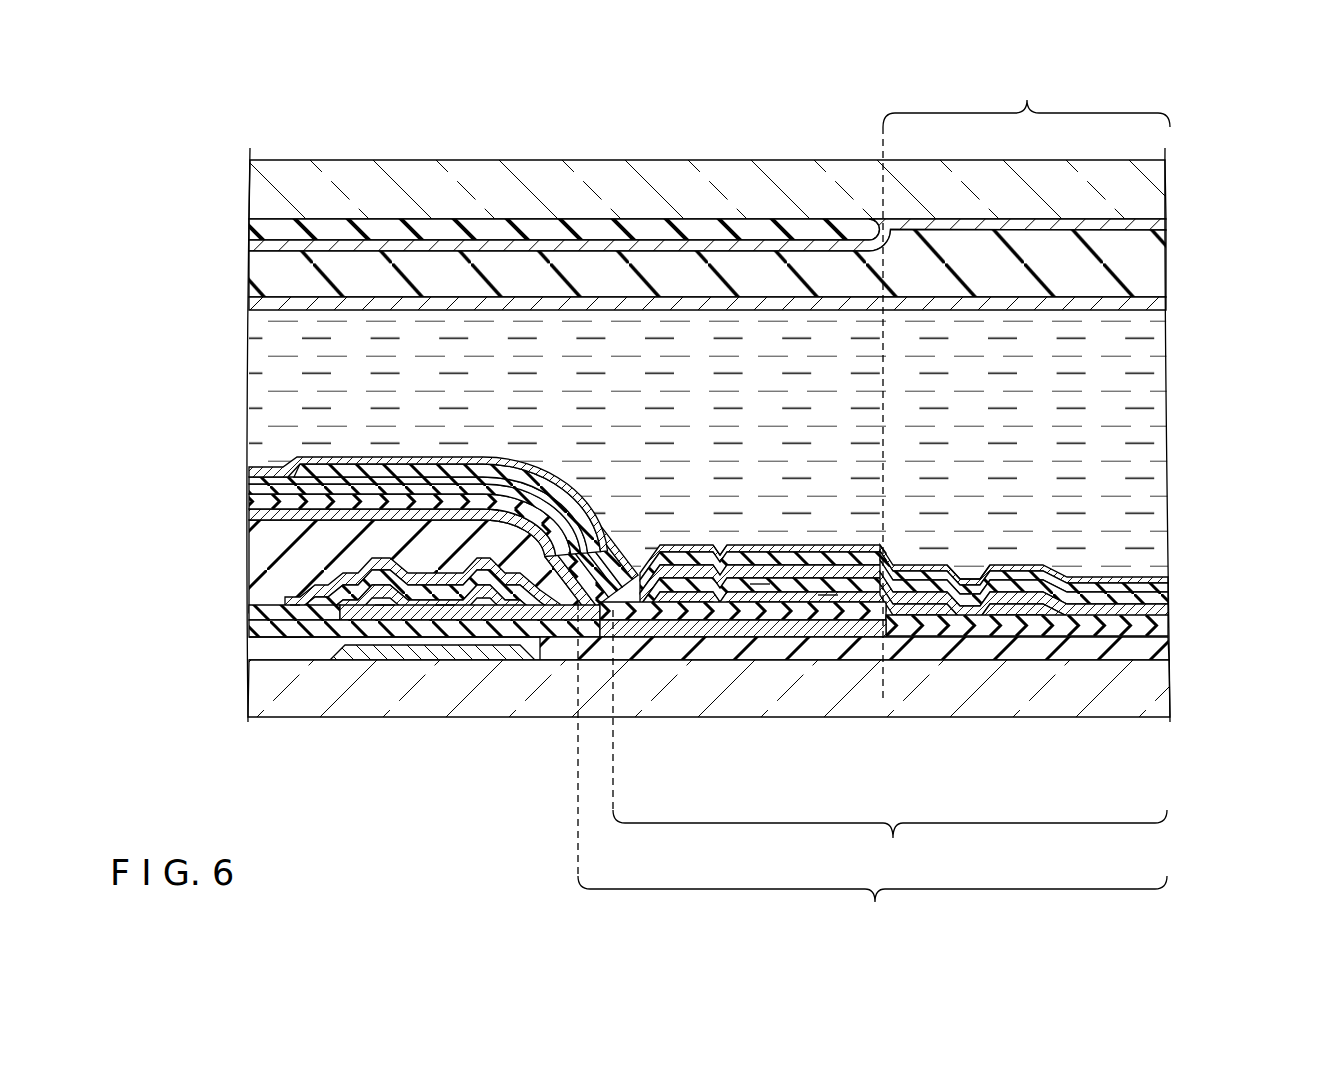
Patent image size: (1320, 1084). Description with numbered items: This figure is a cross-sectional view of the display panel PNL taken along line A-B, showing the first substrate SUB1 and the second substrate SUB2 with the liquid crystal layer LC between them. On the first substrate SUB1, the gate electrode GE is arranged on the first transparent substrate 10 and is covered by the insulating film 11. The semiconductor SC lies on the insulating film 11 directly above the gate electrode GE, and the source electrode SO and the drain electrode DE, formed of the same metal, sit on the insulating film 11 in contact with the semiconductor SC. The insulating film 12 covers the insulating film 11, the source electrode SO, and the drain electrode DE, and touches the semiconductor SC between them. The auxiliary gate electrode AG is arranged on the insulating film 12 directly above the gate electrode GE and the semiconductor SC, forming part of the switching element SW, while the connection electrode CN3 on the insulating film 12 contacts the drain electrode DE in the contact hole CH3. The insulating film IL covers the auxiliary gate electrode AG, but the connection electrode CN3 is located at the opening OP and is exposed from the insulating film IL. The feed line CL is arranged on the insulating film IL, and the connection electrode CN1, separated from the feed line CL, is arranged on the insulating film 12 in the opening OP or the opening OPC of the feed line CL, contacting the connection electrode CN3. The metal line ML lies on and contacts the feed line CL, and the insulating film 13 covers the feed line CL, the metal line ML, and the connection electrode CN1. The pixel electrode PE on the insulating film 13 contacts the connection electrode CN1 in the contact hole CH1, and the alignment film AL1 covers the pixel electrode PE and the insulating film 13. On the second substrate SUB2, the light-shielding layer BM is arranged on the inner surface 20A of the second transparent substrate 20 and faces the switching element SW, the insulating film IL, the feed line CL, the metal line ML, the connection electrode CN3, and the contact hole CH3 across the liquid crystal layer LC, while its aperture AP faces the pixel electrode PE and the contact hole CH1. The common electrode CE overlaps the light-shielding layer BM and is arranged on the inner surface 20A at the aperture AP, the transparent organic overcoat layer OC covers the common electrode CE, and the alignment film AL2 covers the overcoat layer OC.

The display panel PNL is at (720, 501).
The second substrate SUB2 is at (720, 217).
The first substrate SUB1 is at (721, 604).
The second transparent substrate 20 is at (258, 195).
The inner surface 20A is at (694, 236).
The light-shielding layer BM is at (265, 237).
The common electrode CE is at (262, 246).
The overcoat layer OC is at (274, 277).
The alignment film AL2 is at (262, 305).
The liquid crystal layer LC is at (262, 400).
The alignment film AL1 is at (265, 472).
The insulating film 13 is at (262, 489).
The insulating film IL is at (262, 556).
The insulating film 12 is at (262, 617).
The insulating film 11 is at (262, 645).
The first transparent substrate 10 is at (262, 695).
The metal line ML is at (437, 460).
The feed line CL is at (497, 498).
The pixel electrode PE is at (537, 474).
The source electrode SO is at (295, 612).
The gate electrode GE is at (352, 655).
The semiconductor SC is at (384, 612).
The auxiliary gate electrode AG is at (447, 618).
The switching element SW is at (506, 608).
The drain electrode DE is at (640, 625).
The contact hole CH3 is at (724, 602).
The connection electrode CN1 is at (760, 590).
The connection electrode CN3 is at (828, 600).
The contact hole CH1 is at (970, 588).
The aperture AP is at (1026, 387).
The opening OPC is at (890, 741).
The opening OP is at (872, 769).